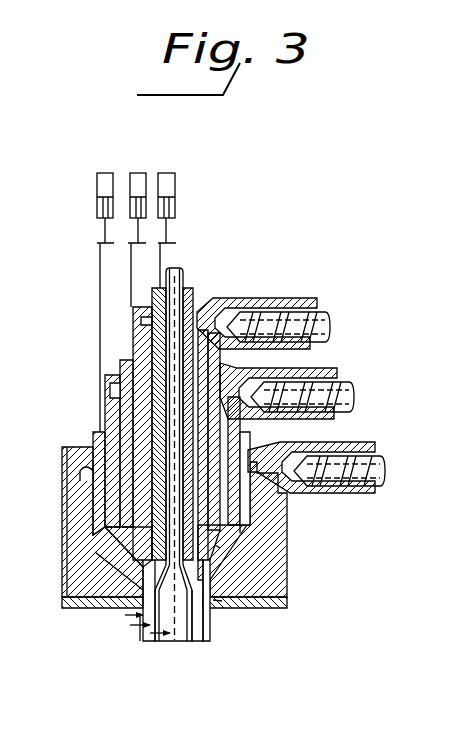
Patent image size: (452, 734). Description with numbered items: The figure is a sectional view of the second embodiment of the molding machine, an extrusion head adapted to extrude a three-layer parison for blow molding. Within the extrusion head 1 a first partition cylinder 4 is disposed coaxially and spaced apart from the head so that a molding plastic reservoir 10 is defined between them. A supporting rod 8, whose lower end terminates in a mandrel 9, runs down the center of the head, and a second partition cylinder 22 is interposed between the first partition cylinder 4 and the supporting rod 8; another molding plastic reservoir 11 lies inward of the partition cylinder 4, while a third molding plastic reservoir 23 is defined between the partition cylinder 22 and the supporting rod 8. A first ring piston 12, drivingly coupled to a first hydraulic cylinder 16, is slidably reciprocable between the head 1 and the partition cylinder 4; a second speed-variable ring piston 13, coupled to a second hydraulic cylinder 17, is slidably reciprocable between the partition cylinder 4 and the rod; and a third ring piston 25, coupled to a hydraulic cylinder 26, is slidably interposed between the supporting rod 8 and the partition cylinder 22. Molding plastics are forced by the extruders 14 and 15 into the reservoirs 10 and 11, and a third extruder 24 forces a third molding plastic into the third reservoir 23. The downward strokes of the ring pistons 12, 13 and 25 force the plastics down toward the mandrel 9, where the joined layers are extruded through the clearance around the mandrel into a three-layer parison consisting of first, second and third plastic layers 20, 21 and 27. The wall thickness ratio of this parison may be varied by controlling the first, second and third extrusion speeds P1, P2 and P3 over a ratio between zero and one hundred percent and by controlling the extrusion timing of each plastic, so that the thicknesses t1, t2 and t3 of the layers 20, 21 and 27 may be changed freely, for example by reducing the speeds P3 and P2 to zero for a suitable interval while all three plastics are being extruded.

The extrusion head 1 is at (80, 578).
The partition cylinder 4 is at (110, 497).
The supporting rod 8 is at (184, 278).
The mandrel 9 is at (175, 628).
The molding plastic reservoir 10 is at (97, 539).
The molding plastic reservoir 11 is at (100, 556).
The first ring piston 12 is at (243, 506).
The second speed-variable ring piston 13 is at (230, 540).
The extruder 14 is at (364, 433).
The extruder 15 is at (331, 366).
The first hydraulic cylinder 16 is at (103, 178).
The second hydraulic cylinder 17 is at (138, 178).
The first plastic layer 20 is at (208, 632).
The second plastic layer 21 is at (200, 642).
The second partition cylinder 22 is at (205, 310).
The third molding plastic reservoir 23 is at (107, 528).
The third extruder 24 is at (299, 297).
The third ring piston 25 is at (160, 414).
The hydraulic cylinder 26 is at (165, 178).
The third plastic layer 27 is at (186, 642).
The first molding plastic extrusion speed P1 is at (248, 533).
The second molding plastic extrusion speed P2 is at (218, 543).
The third molding plastic extrusion speed P3 is at (222, 600).
The thickness of first plastic layer t1 is at (127, 615).
The thickness of second plastic layer t2 is at (137, 625).
The thickness of third plastic layer t3 is at (153, 634).